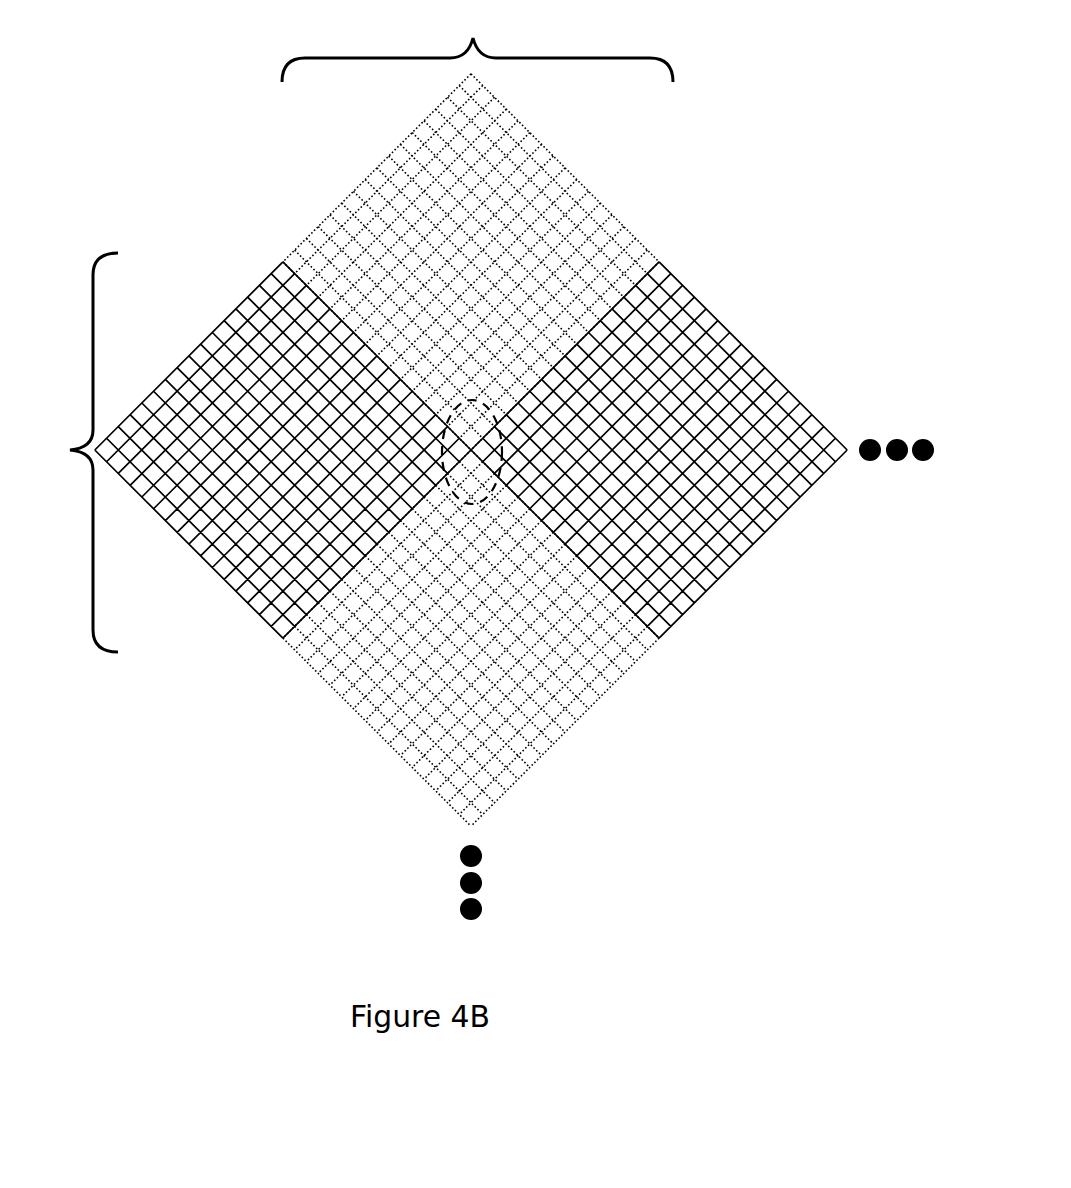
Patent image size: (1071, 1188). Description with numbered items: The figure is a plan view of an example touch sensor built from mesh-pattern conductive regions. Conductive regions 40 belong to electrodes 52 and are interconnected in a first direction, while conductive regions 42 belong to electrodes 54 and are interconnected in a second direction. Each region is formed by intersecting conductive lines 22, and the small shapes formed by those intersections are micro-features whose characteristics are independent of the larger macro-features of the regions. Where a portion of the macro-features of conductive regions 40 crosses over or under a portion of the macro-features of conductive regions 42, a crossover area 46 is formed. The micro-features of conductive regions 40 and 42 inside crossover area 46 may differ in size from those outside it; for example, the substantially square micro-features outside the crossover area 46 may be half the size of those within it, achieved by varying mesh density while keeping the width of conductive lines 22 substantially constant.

The conductive lines 22 is at (605, 256).
The conductive regions 40 is at (360, 160).
The conductive regions 42 is at (228, 292).
The crossover area 46 is at (495, 515).
The electrodes 52 is at (477, 44).
The electrodes 54 is at (77, 452).